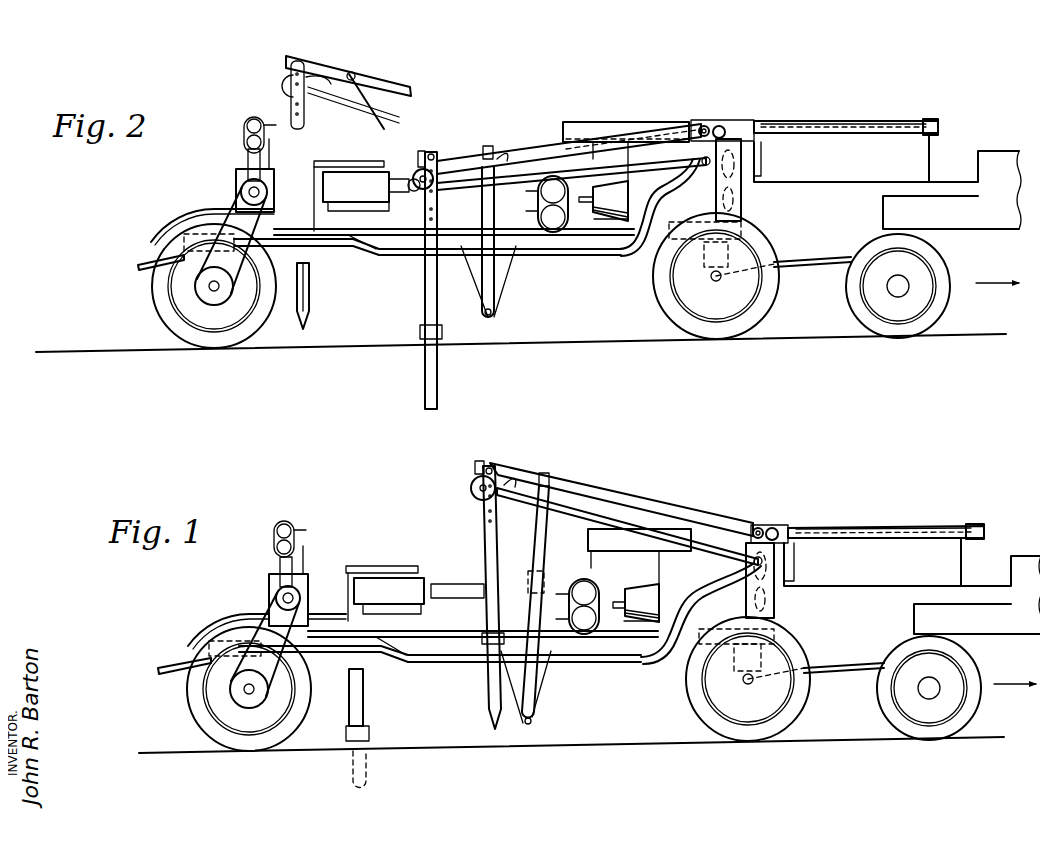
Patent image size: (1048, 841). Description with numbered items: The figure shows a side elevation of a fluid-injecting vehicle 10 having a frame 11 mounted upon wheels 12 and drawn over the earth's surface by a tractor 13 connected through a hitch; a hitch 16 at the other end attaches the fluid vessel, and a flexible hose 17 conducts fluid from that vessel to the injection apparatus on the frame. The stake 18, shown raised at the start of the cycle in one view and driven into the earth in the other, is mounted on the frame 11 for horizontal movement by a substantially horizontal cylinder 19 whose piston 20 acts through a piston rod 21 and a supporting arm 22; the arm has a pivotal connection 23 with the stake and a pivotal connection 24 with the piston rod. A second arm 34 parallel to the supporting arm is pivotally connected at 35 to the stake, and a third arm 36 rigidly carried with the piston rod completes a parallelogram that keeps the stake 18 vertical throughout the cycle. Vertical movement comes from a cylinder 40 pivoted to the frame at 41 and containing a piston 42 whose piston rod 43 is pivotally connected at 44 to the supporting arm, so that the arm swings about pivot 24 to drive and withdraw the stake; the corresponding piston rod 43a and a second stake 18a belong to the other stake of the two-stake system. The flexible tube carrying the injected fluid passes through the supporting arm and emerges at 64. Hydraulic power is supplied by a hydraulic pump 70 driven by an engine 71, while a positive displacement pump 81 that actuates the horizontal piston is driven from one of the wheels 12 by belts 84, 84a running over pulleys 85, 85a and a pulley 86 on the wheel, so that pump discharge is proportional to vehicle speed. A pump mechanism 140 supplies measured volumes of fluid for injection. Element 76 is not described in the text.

In FIG. 2, the vehicle 10 is at (338, 252).
In FIG. 1, the vehicle 10 is at (378, 655).
In FIG. 2, the frame 11 is at (352, 250).
In FIG. 1, the frame 11 is at (445, 637).
In FIG. 2, the wheels 12 is at (168, 317).
In FIG. 1, the wheels 12 is at (195, 708).
In FIG. 2, the tractor 13 is at (975, 228).
In FIG. 1, the tractor 13 is at (998, 633).
In FIG. 2, the hitch 16 is at (140, 265).
In FIG. 1, the hitch 16 is at (170, 662).
In FIG. 2, the flexible hose 17 is at (162, 234).
In FIG. 1, the flexible hose 17 is at (193, 625).
In FIG. 2, the stake 18 is at (420, 302).
In FIG. 1, the stake 18 is at (480, 544).
In FIG. 2, the stake 18a is at (312, 320).
In FIG. 1, the stake 18a is at (366, 708).
In FIG. 2, the horizontal cylinder 19 is at (868, 124).
In FIG. 1, the horizontal cylinder 19 is at (975, 524).
In FIG. 2, the piston 20 is at (927, 120).
In FIG. 1, the piston 20 is at (950, 524).
In FIG. 2, the piston rod 21 is at (808, 124).
In FIG. 1, the piston rod 21 is at (828, 527).
In FIG. 2, the supporting arm 22 is at (637, 134).
In FIG. 1, the supporting arm 22 is at (618, 494).
In FIG. 2, the pivotal connection 23 is at (429, 155).
In FIG. 1, the pivotal connection 23 is at (488, 465).
In FIG. 2, the pivotal connection 24 is at (706, 125).
In FIG. 1, the pivotal connection 24 is at (759, 525).
In FIG. 2, the second arm 34 is at (597, 143).
In FIG. 1, the second arm 34 is at (568, 507).
In FIG. 2, the pivotal connection 35 is at (431, 171).
In FIG. 1, the pivotal connection 35 is at (476, 490).
In FIG. 2, the third arm 36 is at (760, 152).
In FIG. 1, the third arm 36 is at (773, 553).
In FIG. 2, the cylinder 40 is at (492, 214).
In FIG. 1, the cylinder 40 is at (535, 682).
In FIG. 2, the pivotal attachment 41 is at (494, 318).
In FIG. 1, the pivotal attachment 41 is at (534, 722).
In FIG. 1, the piston 42 is at (527, 583).
In FIG. 2, the piston rod 43 is at (500, 158).
In FIG. 1, the piston rod 43 is at (543, 563).
In FIG. 2, the piston rod 43a is at (358, 74).
In FIG. 2, the pivotal connection 44 is at (487, 147).
In FIG. 1, the pivotal connection 44 is at (543, 472).
In FIG. 2, the tube outlet end 64 is at (699, 129).
In FIG. 1, the tube outlet end 64 is at (753, 528).
In FIG. 2, the hydraulic pump 70 is at (553, 222).
In FIG. 1, the hydraulic pump 70 is at (584, 625).
In FIG. 2, the engine 71 is at (678, 218).
In FIG. 1, the engine 71 is at (670, 569).
In FIG. 2, the housing 76 is at (232, 191).
In FIG. 1, the housing 76 is at (262, 575).
In FIG. 2, the positive displacement pump 81 is at (243, 127).
In FIG. 1, the positive displacement pump 81 is at (273, 538).
In FIG. 2, the belt 84 is at (240, 208).
In FIG. 1, the belt 84 is at (300, 675).
In FIG. 2, the belt 84a is at (247, 156).
In FIG. 1, the belt 84a is at (278, 558).
In FIG. 2, the pulley 85 is at (267, 193).
In FIG. 1, the pulley 85 is at (277, 597).
In FIG. 2, the pulley 85a is at (250, 188).
In FIG. 1, the pulley 85a is at (283, 596).
In FIG. 2, the pulley 86 is at (200, 288).
In FIG. 1, the pulley 86 is at (232, 688).
In FIG. 2, the pump mechanism 140 is at (382, 155).
In FIG. 1, the pump mechanism 140 is at (412, 562).